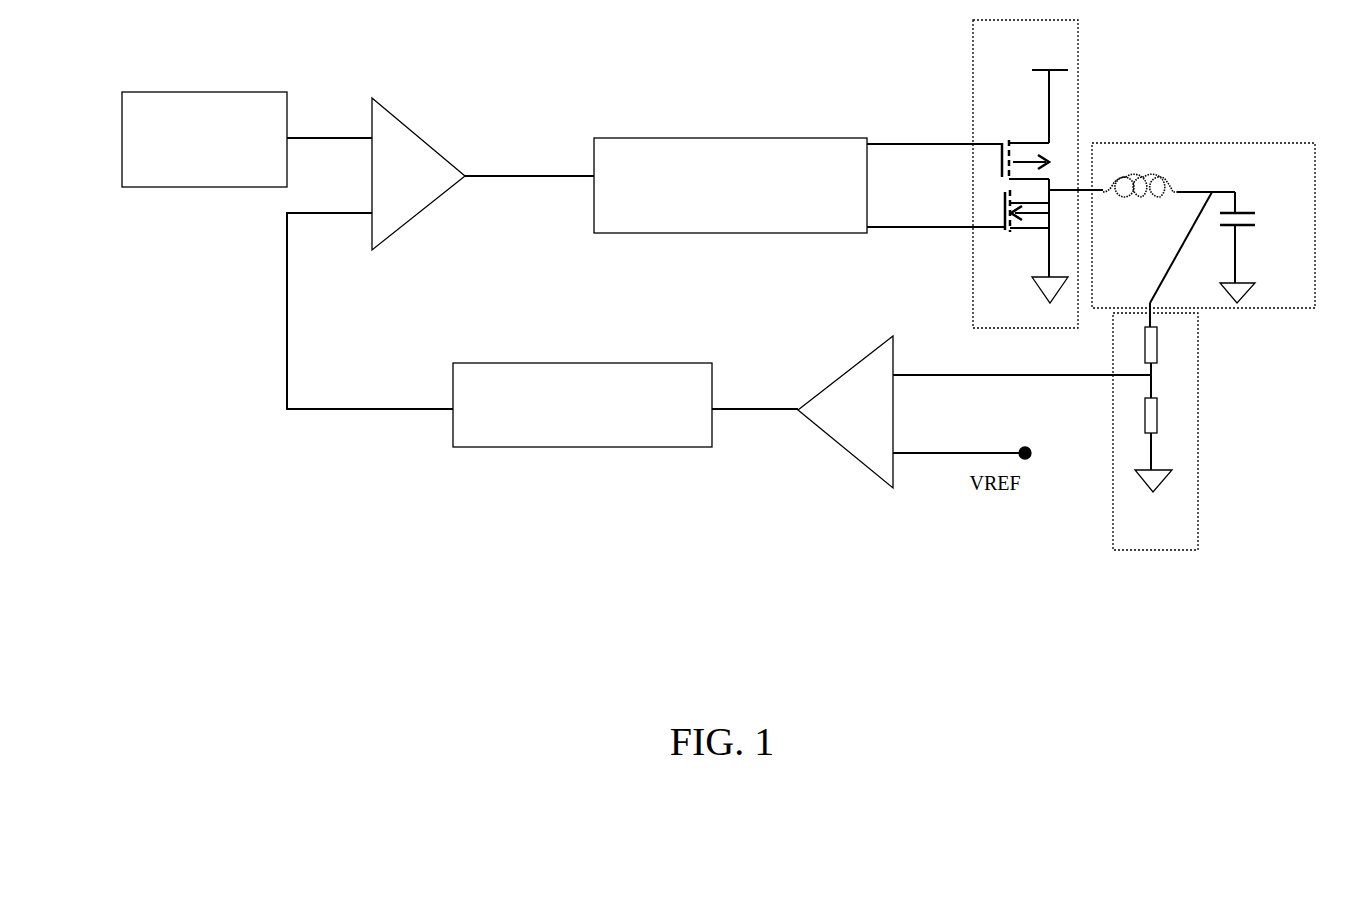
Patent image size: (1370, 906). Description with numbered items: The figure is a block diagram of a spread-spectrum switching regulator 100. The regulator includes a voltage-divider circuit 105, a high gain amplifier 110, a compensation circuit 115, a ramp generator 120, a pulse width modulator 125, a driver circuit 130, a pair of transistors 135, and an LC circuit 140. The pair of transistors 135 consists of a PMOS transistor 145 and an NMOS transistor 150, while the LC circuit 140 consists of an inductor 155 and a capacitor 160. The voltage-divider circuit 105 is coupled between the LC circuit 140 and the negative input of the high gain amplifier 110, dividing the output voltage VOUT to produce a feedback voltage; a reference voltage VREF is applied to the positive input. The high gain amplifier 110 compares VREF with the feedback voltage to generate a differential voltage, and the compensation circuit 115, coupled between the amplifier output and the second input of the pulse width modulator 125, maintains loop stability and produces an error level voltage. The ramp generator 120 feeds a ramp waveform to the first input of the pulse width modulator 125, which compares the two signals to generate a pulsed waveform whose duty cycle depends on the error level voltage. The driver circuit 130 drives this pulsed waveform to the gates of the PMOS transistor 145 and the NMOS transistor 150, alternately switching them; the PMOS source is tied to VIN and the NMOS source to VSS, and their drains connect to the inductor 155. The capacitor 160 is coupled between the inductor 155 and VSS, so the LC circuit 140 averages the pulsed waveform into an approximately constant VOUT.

The spread-spectrum switching regulator 100 is at (310, 553).
The voltage-divider circuit 105 is at (1197, 432).
The high gain amplifier 110 is at (860, 363).
The compensation circuit 115 is at (585, 363).
The ramp generator 120 is at (218, 92).
The pulse width modulator 125 is at (373, 117).
The driver circuit 130 is at (752, 138).
The pair of transistors 135 is at (1002, 174).
The LC circuit 140 is at (1203, 199).
The PMOS transistor 145 is at (1025, 140).
The NMOS transistor 150 is at (1023, 237).
The inductor 155 is at (1145, 200).
The capacitor 160 is at (1227, 225).